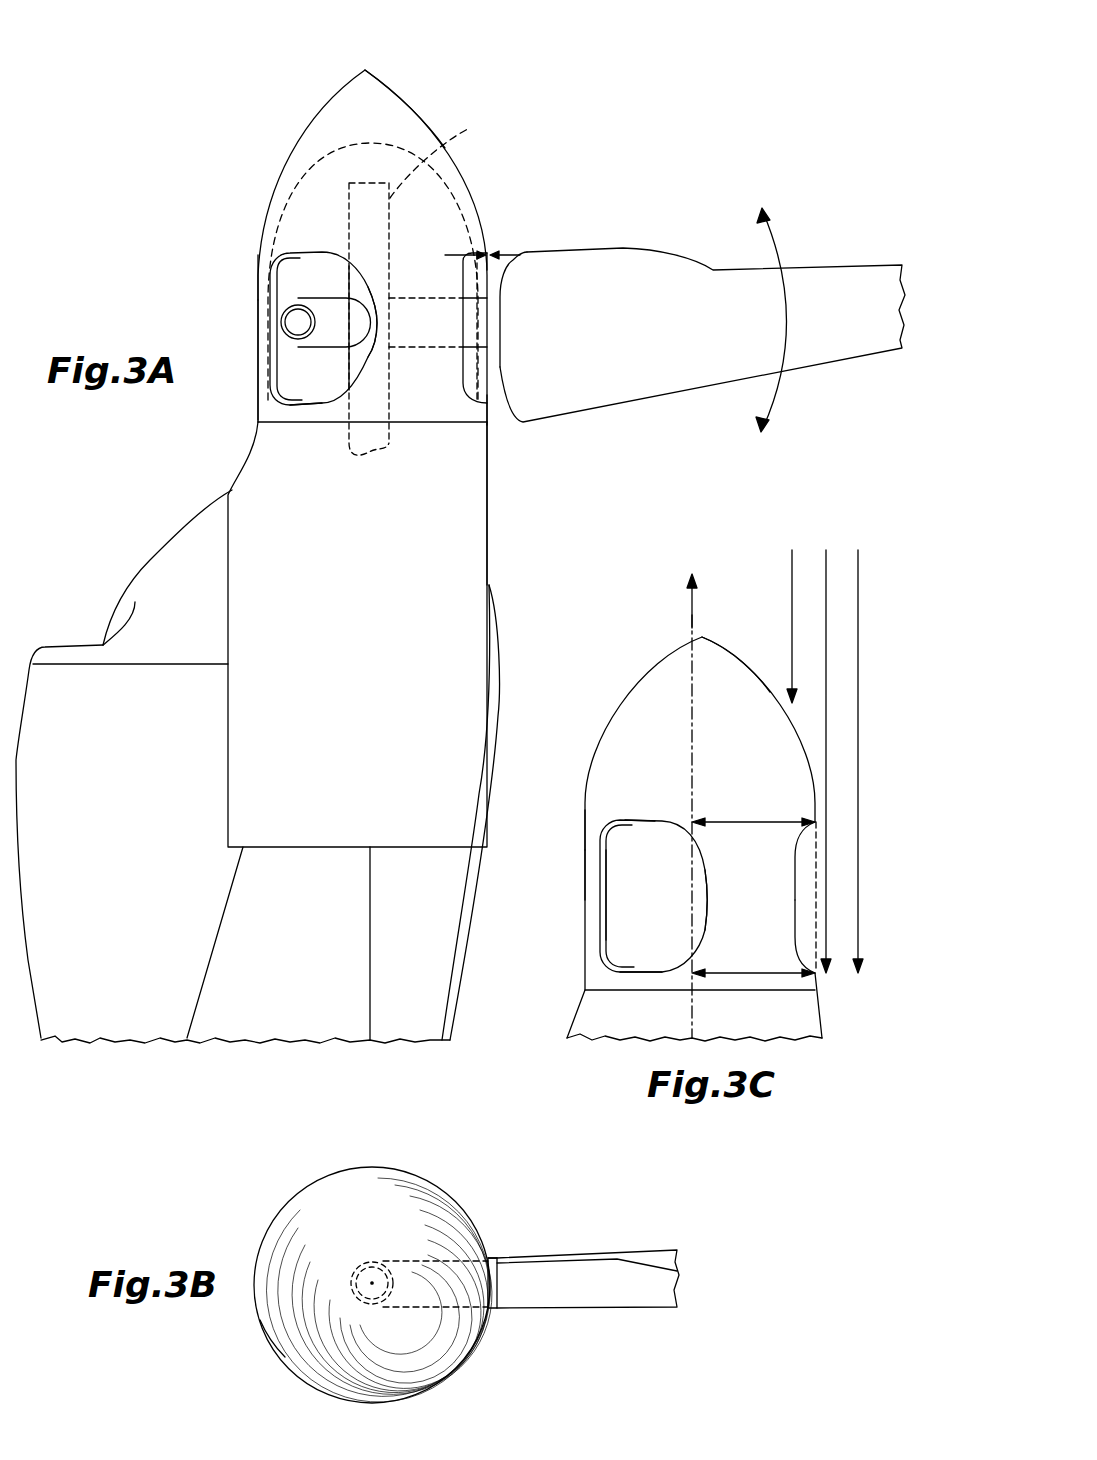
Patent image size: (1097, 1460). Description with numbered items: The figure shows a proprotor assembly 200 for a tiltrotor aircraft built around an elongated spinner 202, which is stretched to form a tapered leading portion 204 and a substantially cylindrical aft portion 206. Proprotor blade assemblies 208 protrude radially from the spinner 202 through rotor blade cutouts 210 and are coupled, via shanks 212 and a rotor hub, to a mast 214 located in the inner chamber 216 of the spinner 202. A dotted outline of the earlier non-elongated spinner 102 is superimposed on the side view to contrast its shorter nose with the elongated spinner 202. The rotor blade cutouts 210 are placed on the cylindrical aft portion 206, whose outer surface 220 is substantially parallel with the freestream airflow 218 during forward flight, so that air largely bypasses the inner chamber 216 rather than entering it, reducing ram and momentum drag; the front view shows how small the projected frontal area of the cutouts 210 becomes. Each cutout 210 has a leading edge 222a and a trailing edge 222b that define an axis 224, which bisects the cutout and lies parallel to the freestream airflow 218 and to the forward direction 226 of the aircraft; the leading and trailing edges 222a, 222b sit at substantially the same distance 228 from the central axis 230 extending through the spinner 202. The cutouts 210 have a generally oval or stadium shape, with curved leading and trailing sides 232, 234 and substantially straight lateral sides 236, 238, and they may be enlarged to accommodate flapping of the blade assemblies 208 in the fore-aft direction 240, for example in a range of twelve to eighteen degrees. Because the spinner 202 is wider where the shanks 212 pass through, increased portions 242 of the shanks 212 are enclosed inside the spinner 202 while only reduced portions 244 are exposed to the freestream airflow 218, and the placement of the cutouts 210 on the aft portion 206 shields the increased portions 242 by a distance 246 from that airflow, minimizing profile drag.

In FIG. 3A, the non-elongated spinner 102 is at (462, 127).
In FIG. 3A, the proprotor assembly 200 is at (232, 140).
In FIG. 3B, the proprotor assembly 200 is at (247, 1227).
In FIG. 3A, the spinner 202 is at (350, 70).
In FIG. 3C, the spinner 202 is at (620, 697).
In FIG. 3B, the spinner 202 is at (385, 1167).
In FIG. 3A, the tapered leading portion 204 is at (424, 90).
In FIG. 3C, the tapered leading portion 204 is at (713, 637).
In FIG. 3B, the tapered leading portion 204 is at (285, 1357).
In FIG. 3A, the cylindrical aft portion 206 is at (256, 266).
In FIG. 3C, the cylindrical aft portion 206 is at (583, 830).
In FIG. 3A, the proprotor blade assembly 208 is at (625, 248).
In FIG. 3B, the proprotor blade assembly 208 is at (577, 1307).
In FIG. 3A, the rotor blade cutout 210 is at (291, 250).
In FIG. 3C, the rotor blade cutout 210 is at (620, 820).
In FIG. 3A, the shank 212 is at (497, 332).
In FIG. 3B, the shank 212 is at (490, 1310).
In FIG. 3A, the mast 214 is at (426, 198).
In FIG. 3B, the mast 214 is at (353, 1270).
In FIG. 3A, the inner chamber 216 is at (287, 357).
In FIG. 3C, the inner chamber 216 is at (613, 922).
In FIG. 3C, the freestream airflow 218 is at (825, 560).
In FIG. 3A, the outer surface 220 is at (256, 312).
In FIG. 3C, the outer surface 220 is at (583, 878).
In FIG. 3A, the leading edge 222a is at (490, 250).
In FIG. 3C, the leading edge 222a is at (815, 822).
In FIG. 3A, the trailing edge 222b is at (487, 403).
In FIG. 3C, the trailing edge 222b is at (815, 973).
In FIG. 3A, the axis 224 is at (470, 280).
In FIG. 3C, the axis 224 is at (813, 868).
In FIG. 3C, the forward direction 226 is at (690, 607).
In FIG. 3C, the distance 228 is at (783, 817).
In FIG. 3C, the central axis 230 is at (698, 665).
In FIG. 3B, the central axis 230 is at (372, 1283).
In FIG. 3A, the leading side 232 is at (308, 252).
In FIG. 3C, the leading side 232 is at (637, 818).
In FIG. 3A, the trailing side 234 is at (305, 405).
In FIG. 3C, the trailing side 234 is at (633, 975).
In FIG. 3A, the lateral side 236 is at (275, 333).
In FIG. 3C, the lateral side 236 is at (598, 898).
In FIG. 3A, the lateral side 238 is at (377, 327).
In FIG. 3C, the lateral side 238 is at (707, 893).
In FIG. 3A, the fore-aft direction 240 is at (780, 257).
In FIG. 3A, the increased portion 242 is at (483, 297).
In FIG. 3B, the increased portion 242 is at (490, 1257).
In FIG. 3A, the reduced portion 244 is at (500, 293).
In FIG. 3B, the reduced portion 244 is at (497, 1260).
In FIG. 3A, the distance 246 is at (505, 250).